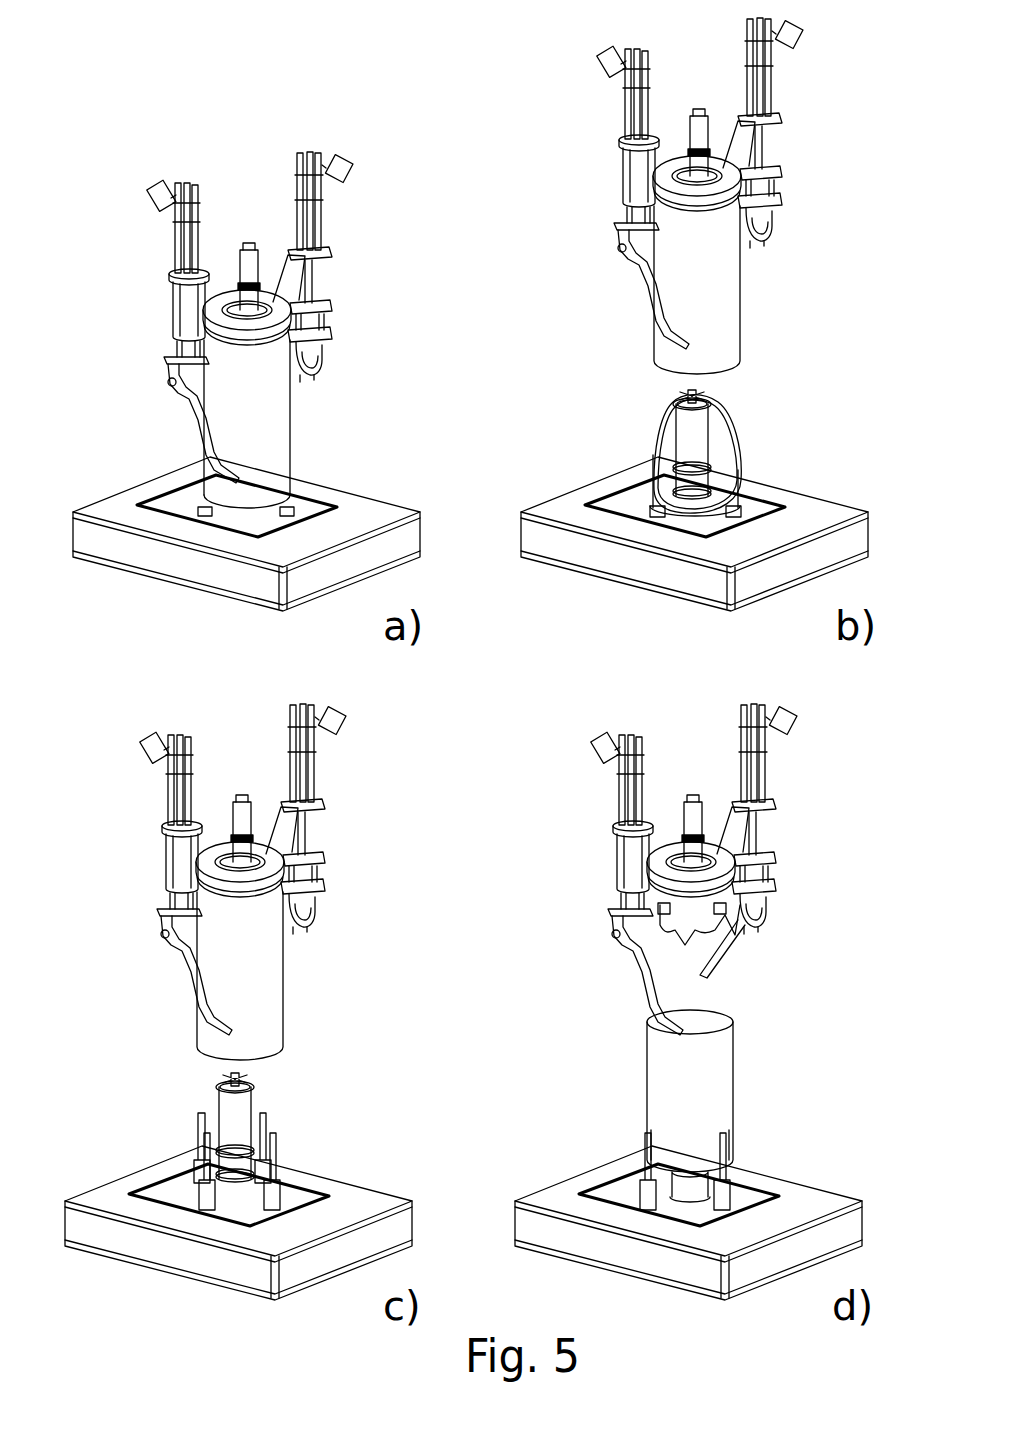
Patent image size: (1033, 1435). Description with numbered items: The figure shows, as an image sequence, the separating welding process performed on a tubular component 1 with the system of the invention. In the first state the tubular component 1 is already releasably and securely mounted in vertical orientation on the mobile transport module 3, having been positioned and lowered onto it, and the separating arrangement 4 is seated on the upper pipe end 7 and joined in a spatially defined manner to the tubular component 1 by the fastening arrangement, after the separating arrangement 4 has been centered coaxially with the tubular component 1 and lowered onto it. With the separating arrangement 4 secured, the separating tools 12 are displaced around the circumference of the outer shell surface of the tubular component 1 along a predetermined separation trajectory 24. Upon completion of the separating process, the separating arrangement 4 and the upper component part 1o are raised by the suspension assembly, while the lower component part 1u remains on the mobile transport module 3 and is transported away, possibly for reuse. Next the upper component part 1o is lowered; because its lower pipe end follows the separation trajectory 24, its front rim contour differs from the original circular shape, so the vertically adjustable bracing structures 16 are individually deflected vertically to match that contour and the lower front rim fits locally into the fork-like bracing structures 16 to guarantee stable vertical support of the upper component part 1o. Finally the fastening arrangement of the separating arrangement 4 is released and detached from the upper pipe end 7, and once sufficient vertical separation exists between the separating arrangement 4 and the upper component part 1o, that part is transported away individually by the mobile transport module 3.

In FIG. 5a, the tubular component 1 is at (279, 428).
In FIG. 5b, the upper component part 1o is at (722, 316).
In FIG. 5c, the upper component part 1o is at (270, 998).
In FIG. 5d, the upper component part 1o is at (655, 1080).
In FIG. 5b, the lower component part 1u is at (655, 450).
In FIG. 5a, the mobile transport module 3 is at (100, 507).
In FIG. 5b, the mobile transport module 3 is at (558, 508).
In FIG. 5d, the mobile transport module 3 is at (552, 1198).
In FIG. 5a, the separating arrangement 4 is at (212, 317).
In FIG. 5b, the separating arrangement 4 is at (588, 175).
In FIG. 5d, the separating arrangement 4 is at (582, 863).
In FIG. 5d, the upper pipe end 7 is at (701, 1098).
In FIG. 5a, the separating tools 12 is at (215, 470).
In FIG. 5c, the vertically adjustable bracing structures 16 is at (203, 1148).
In FIG. 5a, the separation trajectory 24 is at (268, 494).